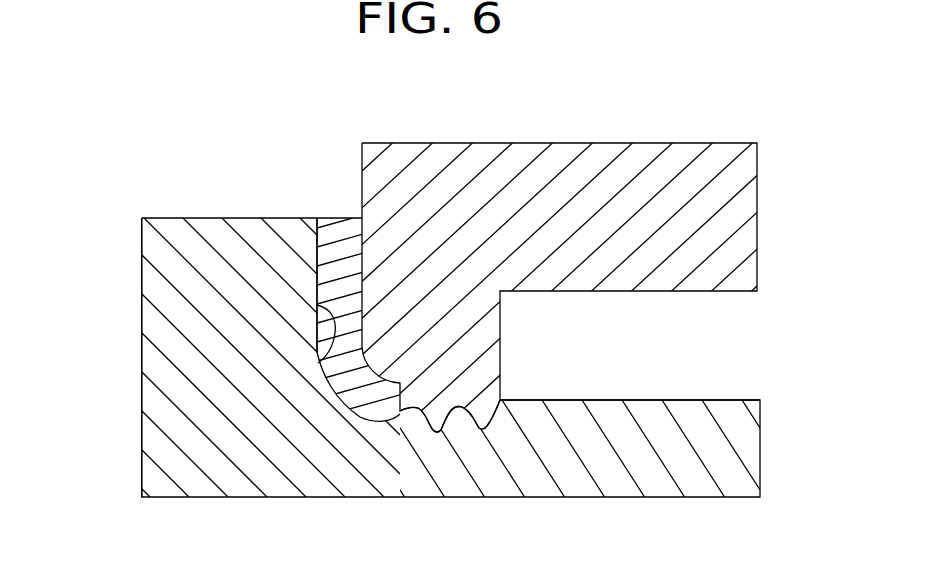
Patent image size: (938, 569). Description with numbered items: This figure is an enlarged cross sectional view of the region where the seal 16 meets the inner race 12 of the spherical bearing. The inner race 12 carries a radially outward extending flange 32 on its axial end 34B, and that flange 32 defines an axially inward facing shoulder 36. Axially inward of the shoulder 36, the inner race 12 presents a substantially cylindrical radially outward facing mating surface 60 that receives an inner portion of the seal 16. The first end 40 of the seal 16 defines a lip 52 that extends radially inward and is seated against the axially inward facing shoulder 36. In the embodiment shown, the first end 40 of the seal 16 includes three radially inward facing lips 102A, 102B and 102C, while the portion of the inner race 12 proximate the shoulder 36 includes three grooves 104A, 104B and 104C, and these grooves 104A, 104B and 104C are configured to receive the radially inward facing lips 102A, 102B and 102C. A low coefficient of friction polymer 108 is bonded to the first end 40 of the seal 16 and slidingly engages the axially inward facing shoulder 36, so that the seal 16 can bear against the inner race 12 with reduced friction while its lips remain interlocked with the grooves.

The inner race 12 is at (735, 445).
The seal 16 is at (727, 202).
The radially outward extending flange 32 is at (182, 237).
The axial end 34B is at (141, 383).
The axially inward facing shoulder 36 is at (320, 253).
The first end 40 is at (405, 172).
The lip 52 is at (382, 362).
The radially outward facing mating surface 60 is at (632, 402).
The radially inward facing lip 102A is at (403, 410).
The radially inward facing lip 102B is at (441, 428).
The radially inward facing lip 102C is at (480, 427).
The groove 104A is at (400, 415).
The groove 104B is at (474, 426).
The groove 104C is at (487, 426).
The low coefficient of friction polymer 108 is at (347, 233).